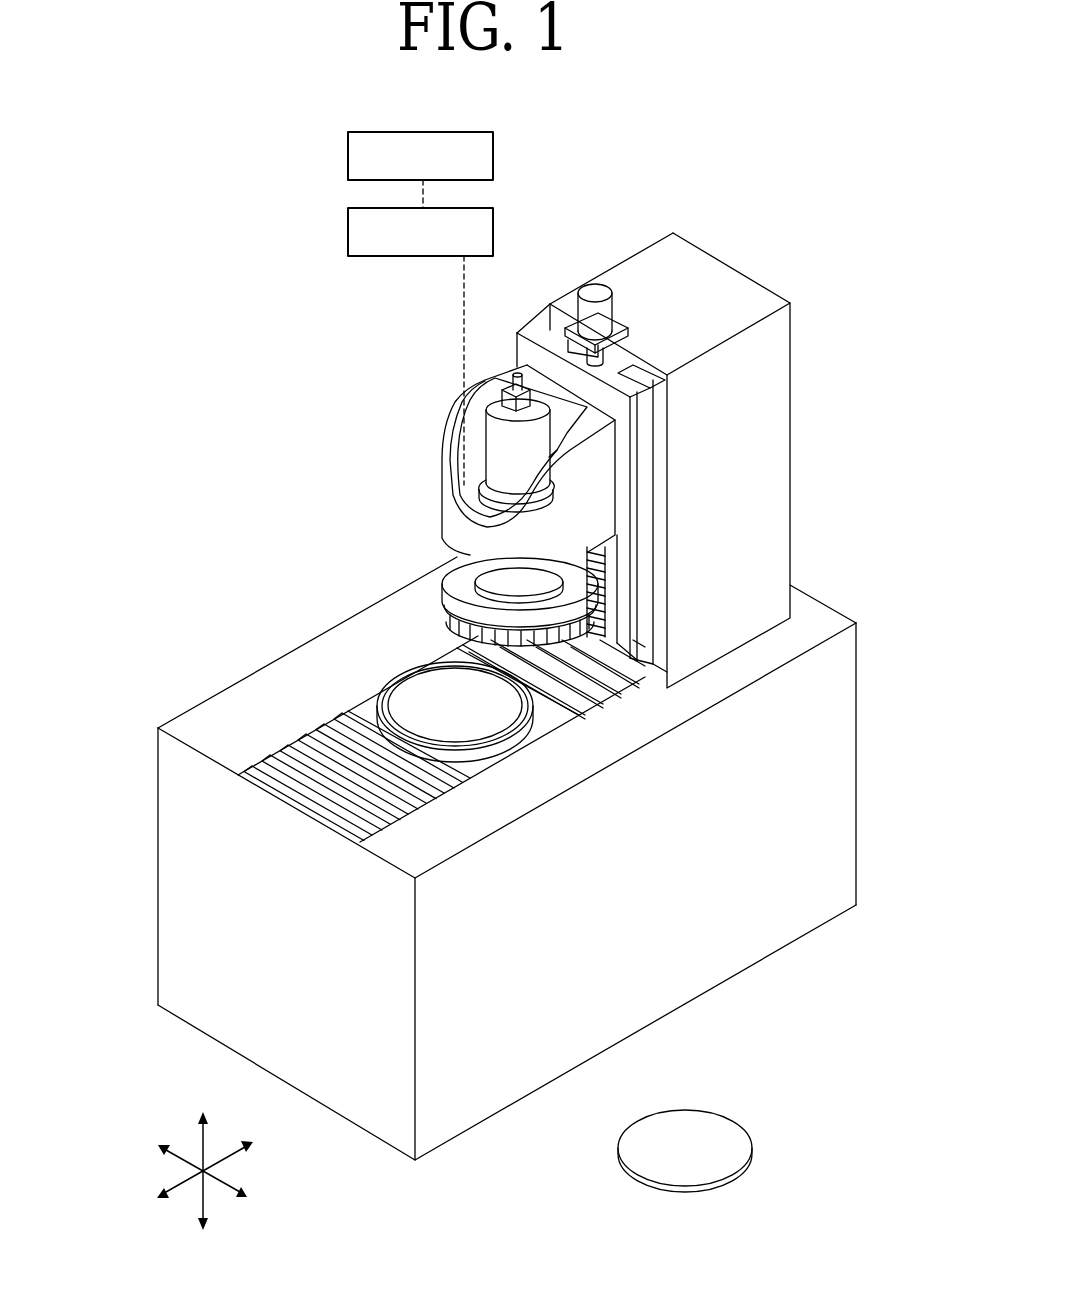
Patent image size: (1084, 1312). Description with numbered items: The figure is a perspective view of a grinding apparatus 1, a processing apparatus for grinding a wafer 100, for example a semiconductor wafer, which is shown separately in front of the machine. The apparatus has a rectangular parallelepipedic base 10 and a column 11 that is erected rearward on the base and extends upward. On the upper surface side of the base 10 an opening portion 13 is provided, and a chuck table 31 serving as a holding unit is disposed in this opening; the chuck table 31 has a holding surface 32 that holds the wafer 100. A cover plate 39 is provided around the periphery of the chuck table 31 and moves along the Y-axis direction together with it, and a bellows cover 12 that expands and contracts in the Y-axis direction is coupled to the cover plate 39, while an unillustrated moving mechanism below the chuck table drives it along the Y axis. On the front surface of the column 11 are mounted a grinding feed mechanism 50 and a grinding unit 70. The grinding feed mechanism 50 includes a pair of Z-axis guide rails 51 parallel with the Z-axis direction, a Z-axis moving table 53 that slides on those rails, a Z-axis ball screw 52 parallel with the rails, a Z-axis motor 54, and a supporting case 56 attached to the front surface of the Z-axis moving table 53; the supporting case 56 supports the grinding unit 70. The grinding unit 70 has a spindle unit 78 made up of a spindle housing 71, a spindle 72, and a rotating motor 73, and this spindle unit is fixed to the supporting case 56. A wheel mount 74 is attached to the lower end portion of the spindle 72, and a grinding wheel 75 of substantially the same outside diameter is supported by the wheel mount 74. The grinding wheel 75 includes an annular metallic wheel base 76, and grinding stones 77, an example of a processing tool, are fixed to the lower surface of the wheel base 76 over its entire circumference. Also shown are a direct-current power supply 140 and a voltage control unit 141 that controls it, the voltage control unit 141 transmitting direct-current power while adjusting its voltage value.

The grinding apparatus 1 is at (201, 218).
The base 10 is at (805, 906).
The column 11 is at (766, 340).
The bellows cover 12 is at (312, 748).
The opening portion 13 is at (267, 754).
The chuck table 31 is at (492, 770).
The holding surface 32 is at (500, 714).
The cover plate 39 is at (463, 770).
The grinding feed mechanism 50 is at (500, 152).
The Z-axis guide rails 51 is at (549, 313).
The Z-axis ball screw 52 is at (644, 377).
The Z-axis moving table 53 is at (529, 332).
The Z-axis motor 54 is at (594, 292).
The supporting case 56 is at (488, 358).
The grinding unit 70 is at (300, 360).
The spindle housing 71 is at (460, 495).
The spindle 72 is at (512, 410).
The rotating motor 73 is at (500, 447).
The wheel mount 74 is at (457, 578).
The grinding wheel 75 is at (346, 495).
The wheel base 76 is at (447, 618).
The grinding stones 77 is at (460, 636).
The spindle unit 78 is at (346, 322).
The wafer 100 is at (754, 1117).
The direct-current power supply 140 is at (348, 153).
The voltage control unit 141 is at (348, 229).